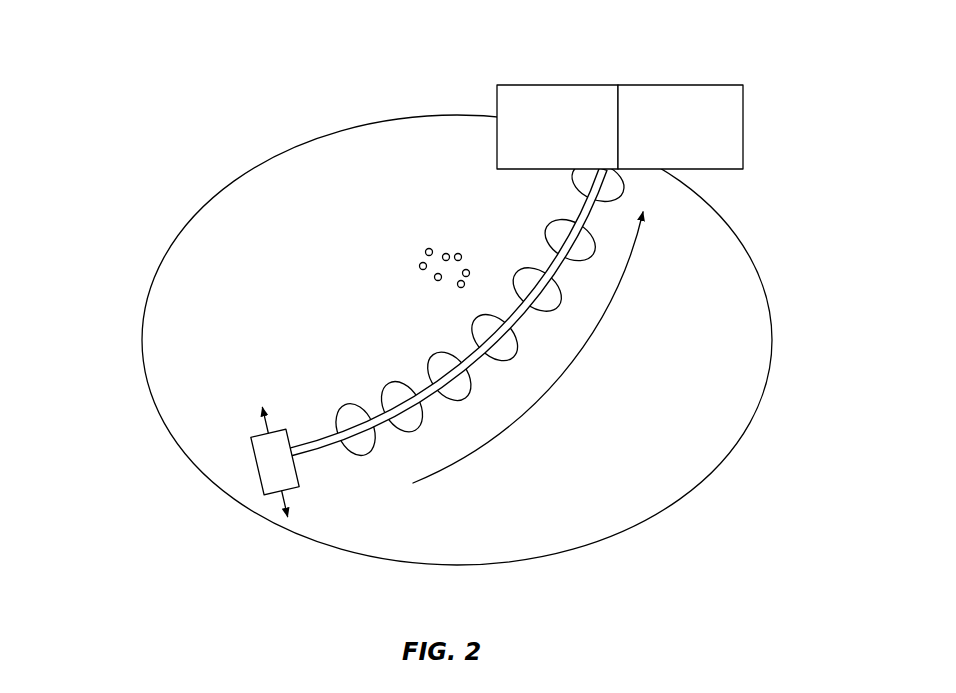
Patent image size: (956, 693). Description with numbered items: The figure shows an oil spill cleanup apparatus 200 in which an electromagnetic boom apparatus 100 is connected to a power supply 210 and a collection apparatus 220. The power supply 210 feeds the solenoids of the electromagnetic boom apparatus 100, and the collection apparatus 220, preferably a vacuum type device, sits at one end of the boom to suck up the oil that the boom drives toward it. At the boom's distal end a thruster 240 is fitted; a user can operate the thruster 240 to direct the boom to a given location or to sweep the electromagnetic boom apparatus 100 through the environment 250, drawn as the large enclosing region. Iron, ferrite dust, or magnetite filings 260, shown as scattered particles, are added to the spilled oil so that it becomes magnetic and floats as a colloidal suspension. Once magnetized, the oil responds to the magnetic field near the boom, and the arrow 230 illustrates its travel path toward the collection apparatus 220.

The electromagnetic boom apparatus 100 is at (318, 450).
The oil spill cleanup apparatus 200 is at (190, 52).
The power supply 210 is at (545, 84).
The collection apparatus 220 is at (700, 84).
The arrow 230 is at (582, 348).
The thruster 240 is at (268, 475).
The environment 250 is at (272, 202).
The magnetite filings 260 is at (417, 246).